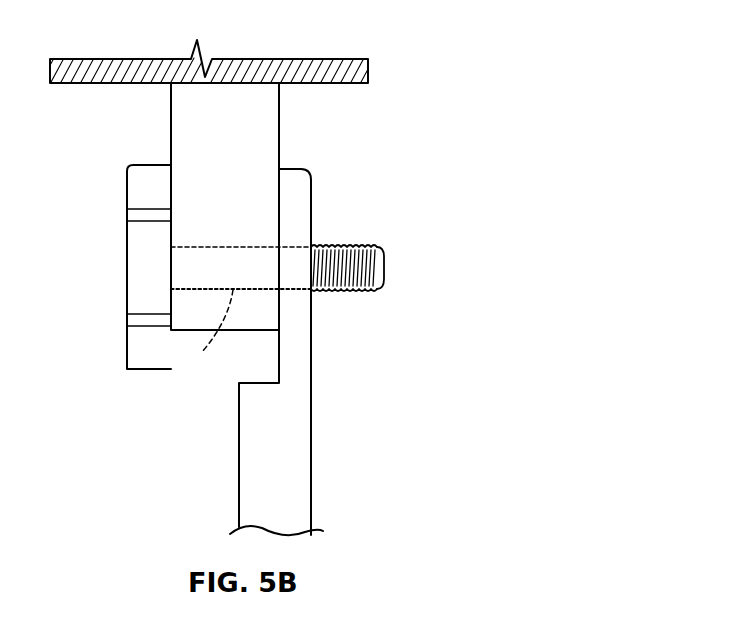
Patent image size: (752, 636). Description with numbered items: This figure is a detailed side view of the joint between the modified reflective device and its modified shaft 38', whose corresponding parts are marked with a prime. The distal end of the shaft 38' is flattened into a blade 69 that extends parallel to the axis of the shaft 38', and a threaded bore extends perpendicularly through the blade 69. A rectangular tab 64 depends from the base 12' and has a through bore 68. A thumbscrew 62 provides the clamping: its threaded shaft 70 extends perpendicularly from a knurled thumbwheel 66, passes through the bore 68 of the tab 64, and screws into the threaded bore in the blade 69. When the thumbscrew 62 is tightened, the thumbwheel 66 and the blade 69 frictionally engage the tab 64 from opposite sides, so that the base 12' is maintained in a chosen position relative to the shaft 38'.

The base 12' is at (232, 62).
The thumbscrew 62 is at (97, 203).
The rectangular tab 64 is at (262, 107).
The knurled thumbwheel 66 is at (145, 296).
The through bore 68 is at (211, 335).
The blade 69 is at (301, 327).
The threaded shaft 70 is at (333, 247).
The shaft 38' is at (298, 481).